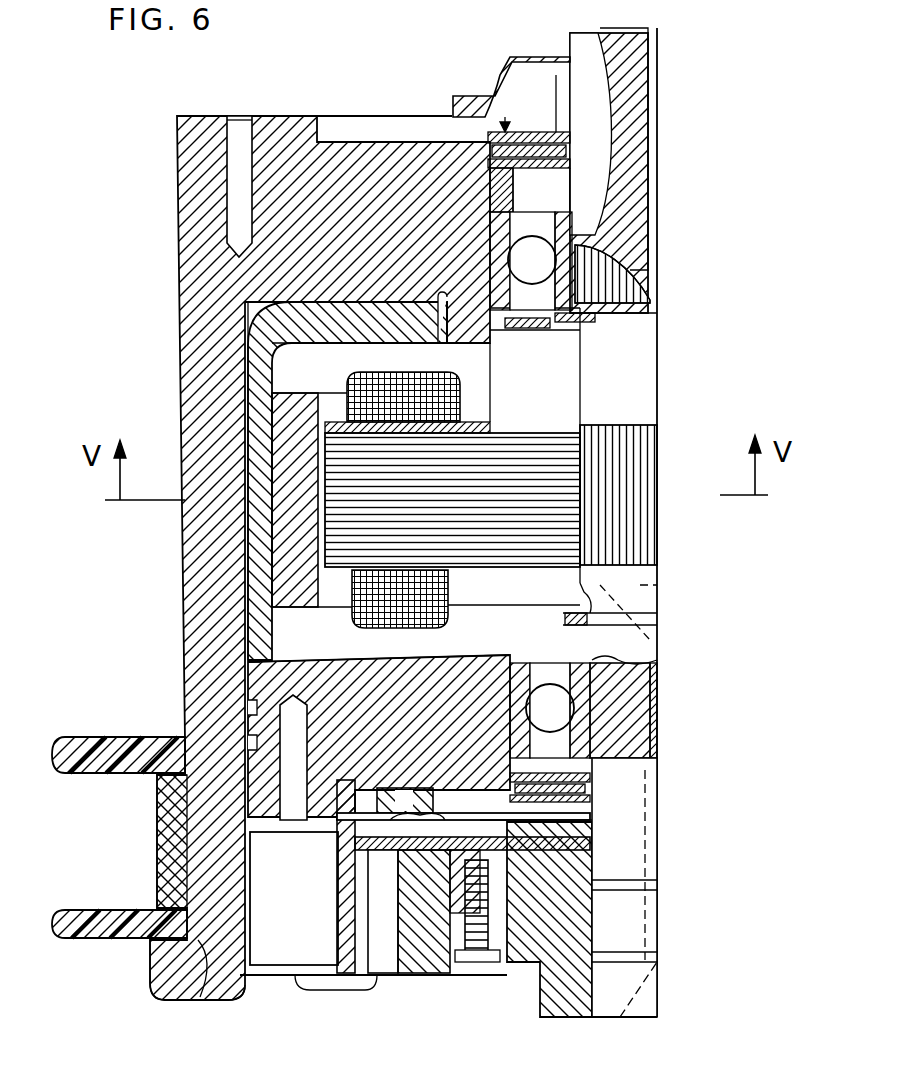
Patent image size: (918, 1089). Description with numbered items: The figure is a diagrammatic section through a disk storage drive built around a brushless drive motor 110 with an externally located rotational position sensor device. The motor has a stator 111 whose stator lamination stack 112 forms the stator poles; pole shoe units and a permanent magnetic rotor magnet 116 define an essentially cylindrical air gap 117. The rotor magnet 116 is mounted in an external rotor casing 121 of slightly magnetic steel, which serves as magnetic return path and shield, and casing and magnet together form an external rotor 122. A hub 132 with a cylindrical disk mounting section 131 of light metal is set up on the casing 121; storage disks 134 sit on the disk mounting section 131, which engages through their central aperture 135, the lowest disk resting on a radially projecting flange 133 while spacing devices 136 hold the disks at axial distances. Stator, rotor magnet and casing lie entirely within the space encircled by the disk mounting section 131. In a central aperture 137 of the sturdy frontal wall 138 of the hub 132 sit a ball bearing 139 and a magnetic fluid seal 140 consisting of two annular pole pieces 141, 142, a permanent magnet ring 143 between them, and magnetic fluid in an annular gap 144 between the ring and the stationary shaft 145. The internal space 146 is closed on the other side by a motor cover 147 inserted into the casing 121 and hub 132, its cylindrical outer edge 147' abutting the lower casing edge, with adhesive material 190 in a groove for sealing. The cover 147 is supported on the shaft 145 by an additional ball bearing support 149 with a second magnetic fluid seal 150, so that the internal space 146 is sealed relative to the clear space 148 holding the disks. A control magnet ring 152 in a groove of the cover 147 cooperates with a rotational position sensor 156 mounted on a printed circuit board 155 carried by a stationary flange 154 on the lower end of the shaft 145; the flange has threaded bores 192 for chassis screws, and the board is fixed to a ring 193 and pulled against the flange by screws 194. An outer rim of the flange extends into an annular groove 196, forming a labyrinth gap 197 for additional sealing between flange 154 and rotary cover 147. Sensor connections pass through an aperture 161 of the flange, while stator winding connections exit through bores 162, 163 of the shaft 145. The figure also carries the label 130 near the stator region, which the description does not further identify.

The brushless drive motor 110 is at (657, 422).
The stator 111 is at (535, 445).
The stator lamination stack 112 is at (560, 525).
The rotor magnet 116 is at (255, 428).
The air gap 117 is at (250, 512).
The external rotor casing 121 is at (248, 590).
The external rotor 122 is at (151, 237).
The stator passage 130 is at (345, 378).
The disk mounting section 131 is at (245, 614).
The hub 132 is at (292, 116).
The flange 133 is at (150, 990).
The storage disk 134 is at (70, 745).
The central aperture 135 is at (200, 985).
The spacing device 136 is at (157, 875).
The central aperture 137 is at (520, 330).
The frontal wall 138 is at (372, 155).
The ball bearing 139 is at (600, 322).
The magnetic fluid seal 140 is at (505, 100).
The annular pole piece 141 is at (550, 130).
The annular pole piece 142 is at (530, 172).
The permanent magnet ring 143 is at (563, 162).
The annular gap 144 is at (572, 150).
The stationary shaft 145 is at (628, 381).
The internal space 146 is at (414, 633).
The motor cover 147 is at (321, 736).
The cylindrical outer edge 147' is at (192, 650).
The clear space 148 is at (57, 587).
The ball bearing support 149 is at (592, 745).
The magnetic fluid seal 150 is at (592, 800).
The control magnet ring 152 is at (385, 788).
The stationary flange 154 is at (432, 960).
The printed circuit board 155 is at (540, 850).
The rotational position sensor 156 is at (445, 800).
The aperture 161 is at (580, 1000).
The bore 162 is at (640, 648).
The bore 163 is at (660, 848).
The adhesive material 190 is at (170, 800).
The threaded bore 192 is at (385, 960).
The ring 193 is at (530, 950).
The screw 194 is at (476, 960).
The annular groove 196 is at (345, 780).
The labyrinth gap 197 is at (373, 842).